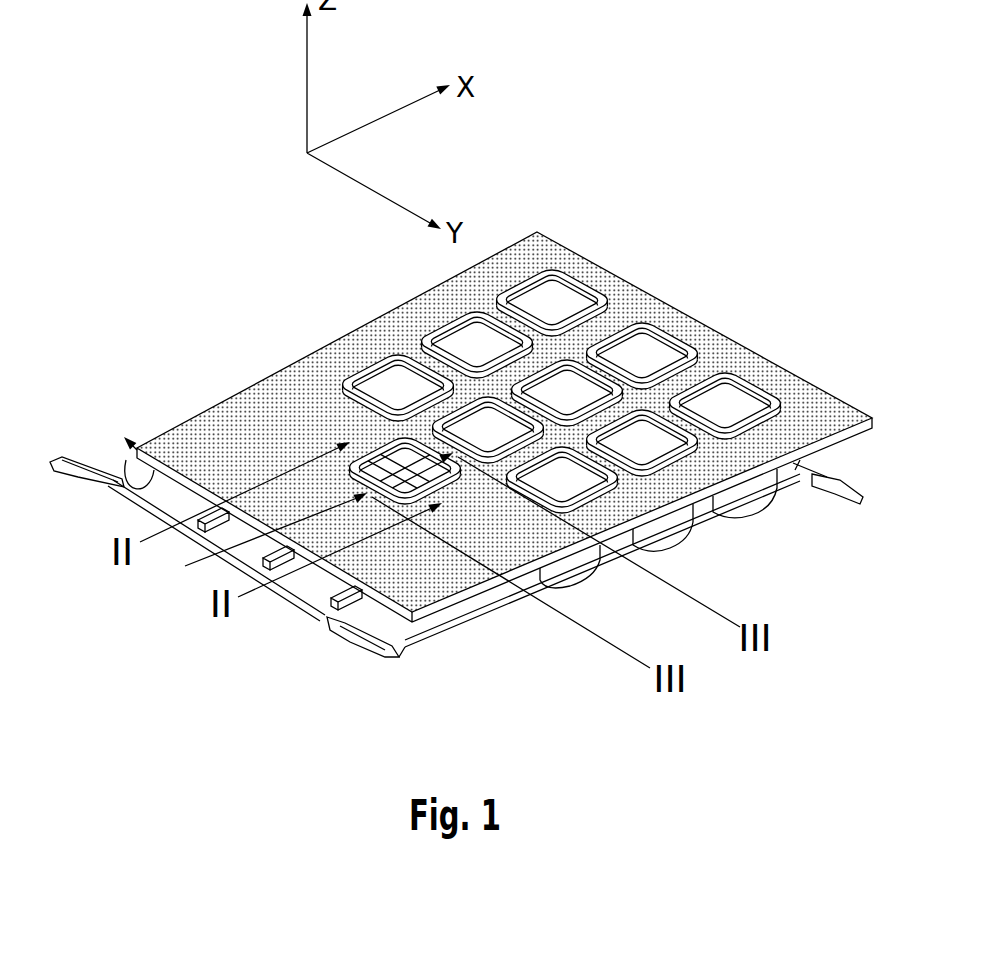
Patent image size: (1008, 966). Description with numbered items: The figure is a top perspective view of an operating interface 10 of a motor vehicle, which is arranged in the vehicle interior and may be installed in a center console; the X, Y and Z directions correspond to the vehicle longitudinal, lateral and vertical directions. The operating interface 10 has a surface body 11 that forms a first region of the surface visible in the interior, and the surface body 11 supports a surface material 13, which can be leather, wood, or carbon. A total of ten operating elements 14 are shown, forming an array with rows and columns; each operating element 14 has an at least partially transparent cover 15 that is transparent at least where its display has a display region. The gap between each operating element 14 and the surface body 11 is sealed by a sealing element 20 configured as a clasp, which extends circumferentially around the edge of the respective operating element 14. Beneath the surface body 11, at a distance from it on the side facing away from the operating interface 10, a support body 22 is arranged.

The operating interface 10 is at (461, 425).
The surface body 11 is at (690, 299).
The surface material 13 is at (222, 442).
The operating element 14 is at (551, 290).
The cover 15 is at (458, 333).
The sealing element 20 is at (390, 448).
The support body 22 is at (307, 600).